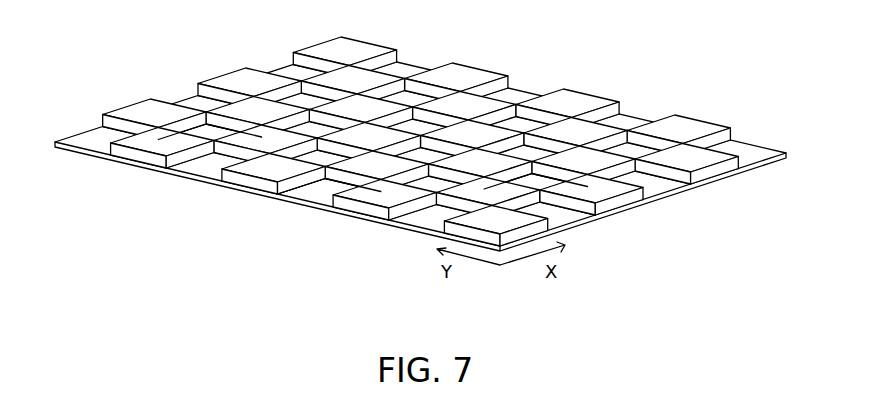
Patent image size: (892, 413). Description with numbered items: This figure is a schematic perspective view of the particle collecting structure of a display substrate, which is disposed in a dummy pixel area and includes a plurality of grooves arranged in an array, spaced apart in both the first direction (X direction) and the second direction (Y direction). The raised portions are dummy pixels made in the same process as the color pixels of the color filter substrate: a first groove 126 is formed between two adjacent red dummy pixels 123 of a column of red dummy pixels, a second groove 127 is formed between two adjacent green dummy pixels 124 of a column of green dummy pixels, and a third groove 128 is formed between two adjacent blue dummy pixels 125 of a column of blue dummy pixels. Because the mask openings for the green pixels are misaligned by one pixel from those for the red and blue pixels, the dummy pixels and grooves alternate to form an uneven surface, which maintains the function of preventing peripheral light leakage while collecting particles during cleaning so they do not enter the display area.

The red dummy pixel 123 is at (368, 192).
The green dummy pixel 124 is at (147, 118).
The blue dummy pixel 125 is at (602, 183).
The first groove 126 is at (312, 192).
The second groove 127 is at (208, 140).
The third groove 128 is at (542, 177).